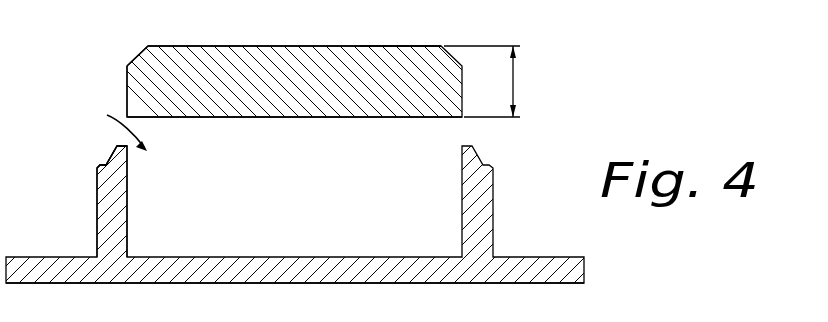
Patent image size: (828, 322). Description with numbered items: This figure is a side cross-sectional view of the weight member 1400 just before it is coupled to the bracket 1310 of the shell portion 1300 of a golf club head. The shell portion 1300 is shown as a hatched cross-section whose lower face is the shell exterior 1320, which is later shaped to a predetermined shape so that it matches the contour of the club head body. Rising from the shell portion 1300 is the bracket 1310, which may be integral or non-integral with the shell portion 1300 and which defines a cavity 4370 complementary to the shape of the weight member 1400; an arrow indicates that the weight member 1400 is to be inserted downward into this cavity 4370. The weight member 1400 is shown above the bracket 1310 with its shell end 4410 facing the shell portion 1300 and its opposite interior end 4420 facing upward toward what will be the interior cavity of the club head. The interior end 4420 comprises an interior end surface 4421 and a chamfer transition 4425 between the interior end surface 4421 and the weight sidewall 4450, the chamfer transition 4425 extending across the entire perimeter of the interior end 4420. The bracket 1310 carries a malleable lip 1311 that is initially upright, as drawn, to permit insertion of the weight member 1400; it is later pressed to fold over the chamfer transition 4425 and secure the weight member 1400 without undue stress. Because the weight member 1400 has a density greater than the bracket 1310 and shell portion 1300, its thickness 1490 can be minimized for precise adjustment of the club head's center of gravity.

The weight member 1400 is at (202, 57).
The interior end 4420 is at (301, 46).
The interior end surface 4421 is at (369, 46).
The chamfer transition 4425 is at (137, 61).
The weight sidewall 4450 is at (127, 88).
The shell end 4410 is at (291, 117).
The thickness 1490 is at (489, 81).
The cavity 4370 is at (98, 125).
The shell portion 1300 is at (396, 284).
The bracket 1310 is at (107, 229).
The malleable lip 1311 is at (112, 158).
The shell exterior 1320 is at (284, 283).